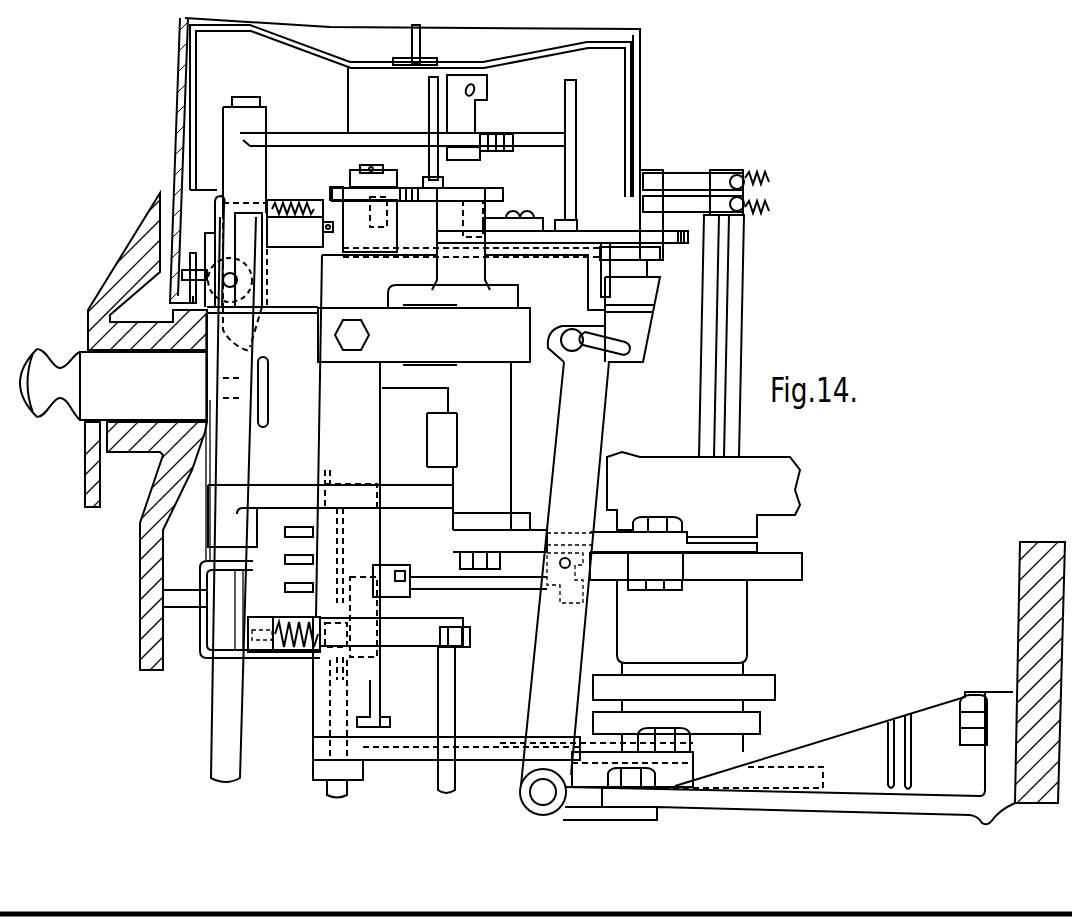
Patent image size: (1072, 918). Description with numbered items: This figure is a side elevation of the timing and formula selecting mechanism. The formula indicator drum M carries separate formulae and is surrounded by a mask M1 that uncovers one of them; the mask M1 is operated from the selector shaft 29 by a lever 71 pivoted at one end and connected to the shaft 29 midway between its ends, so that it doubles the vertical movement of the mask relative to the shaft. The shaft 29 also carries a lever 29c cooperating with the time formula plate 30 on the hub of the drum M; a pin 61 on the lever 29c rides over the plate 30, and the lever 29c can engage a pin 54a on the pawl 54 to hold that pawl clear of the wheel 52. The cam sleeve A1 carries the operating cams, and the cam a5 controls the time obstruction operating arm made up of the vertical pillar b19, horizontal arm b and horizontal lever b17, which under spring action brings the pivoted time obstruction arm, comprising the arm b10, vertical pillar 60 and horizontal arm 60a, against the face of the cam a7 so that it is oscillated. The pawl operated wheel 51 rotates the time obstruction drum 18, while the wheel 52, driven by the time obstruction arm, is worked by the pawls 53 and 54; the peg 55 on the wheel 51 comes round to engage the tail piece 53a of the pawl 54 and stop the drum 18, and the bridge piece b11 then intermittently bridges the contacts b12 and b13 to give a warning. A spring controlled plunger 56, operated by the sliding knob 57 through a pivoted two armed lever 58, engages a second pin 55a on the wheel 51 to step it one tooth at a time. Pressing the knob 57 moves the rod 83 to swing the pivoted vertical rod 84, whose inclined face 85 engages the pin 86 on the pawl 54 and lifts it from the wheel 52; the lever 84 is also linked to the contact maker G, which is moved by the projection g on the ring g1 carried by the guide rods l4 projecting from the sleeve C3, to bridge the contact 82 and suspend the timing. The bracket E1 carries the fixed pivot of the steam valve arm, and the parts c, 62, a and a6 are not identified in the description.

The formula indicator drum M is at (196, 60).
The mask M1 is at (181, 100).
The sleeve C3 is at (423, 40).
The selector shaft 29 is at (243, 105).
The lever 29c is at (292, 137).
The time formula plate 30 is at (487, 92).
The pin 61 is at (505, 145).
The pin 54a is at (568, 94).
The pin c is at (573, 140).
The horizontal arm b is at (497, 775).
The spring controlled plunger 56 is at (340, 208).
The spring block 62 is at (347, 187).
The pawl operated wheel 51 is at (400, 188).
The pawl 53 is at (484, 196).
The tail piece 53a is at (527, 197).
The second pin 55a is at (386, 211).
The peg 55 is at (466, 218).
The pawl 54 is at (590, 238).
The contact b12 is at (687, 203).
The bridge piece b11 is at (663, 155).
The contact b13 is at (690, 177).
The wheel 52 is at (685, 243).
The inclined face 85 is at (651, 291).
The pin 86 is at (602, 270).
The horizontal arm 60a is at (493, 301).
The horizontal lever b17 is at (432, 318).
The vertical pillar 60 is at (470, 447).
The vertical pillar b19 is at (345, 410).
The time obstruction drum 18 is at (420, 557).
The tab a is at (293, 557).
The contact maker G is at (212, 445).
The contact 82 is at (317, 618).
The ring g1 is at (418, 641).
The projection g is at (461, 640).
The guide rods l4 is at (345, 788).
The rod 83 is at (499, 582).
The arm b10 is at (537, 536).
The cam a7 is at (803, 566).
The cam sleeve A1 is at (724, 711).
The flange a6 is at (740, 688).
The cam a5 is at (789, 771).
The bracket E1 is at (918, 728).
The pivoted vertical rod 84 is at (583, 438).
The lever 71 is at (181, 279).
The pivoted two armed lever 58 is at (217, 212).
The knob 57 is at (267, 405).